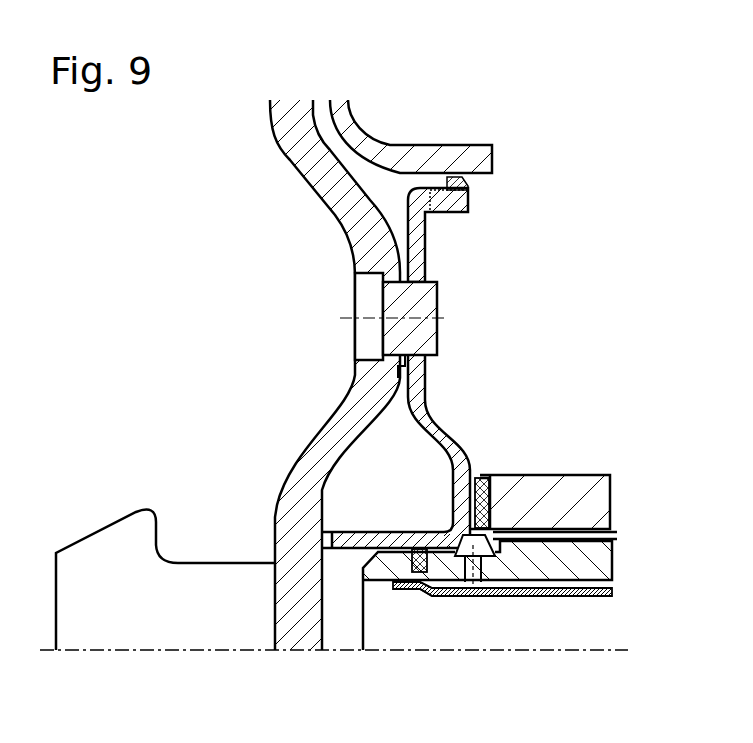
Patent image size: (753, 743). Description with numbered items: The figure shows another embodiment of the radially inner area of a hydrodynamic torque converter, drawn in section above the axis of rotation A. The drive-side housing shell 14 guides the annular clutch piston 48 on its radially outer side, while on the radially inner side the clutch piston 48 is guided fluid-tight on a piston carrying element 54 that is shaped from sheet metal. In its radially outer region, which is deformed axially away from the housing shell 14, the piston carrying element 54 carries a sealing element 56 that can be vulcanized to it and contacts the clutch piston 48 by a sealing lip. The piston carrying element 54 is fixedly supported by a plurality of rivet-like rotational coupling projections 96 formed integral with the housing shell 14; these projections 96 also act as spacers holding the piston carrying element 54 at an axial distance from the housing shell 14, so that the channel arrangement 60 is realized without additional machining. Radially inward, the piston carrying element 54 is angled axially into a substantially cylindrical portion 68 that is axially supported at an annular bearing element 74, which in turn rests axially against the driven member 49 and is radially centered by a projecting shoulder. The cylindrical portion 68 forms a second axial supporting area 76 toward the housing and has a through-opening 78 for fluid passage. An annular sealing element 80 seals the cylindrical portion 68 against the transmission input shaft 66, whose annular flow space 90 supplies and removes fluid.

The housing shell 14 is at (284, 148).
The clutch piston 48 is at (387, 145).
The sealing element 56 is at (468, 197).
The rotational coupling projection 96 is at (422, 325).
The channel arrangement 60 is at (401, 370).
The piston carrying element 54 is at (440, 432).
The annular bearing element 74 is at (492, 478).
The driven member 49 is at (583, 475).
The through-opening 78 is at (325, 543).
The transmission input shaft 66 is at (592, 563).
The annular flow space 90 is at (613, 583).
The second axial supporting area 76 is at (323, 552).
The substantially cylindrical portion 68 is at (385, 541).
The annular sealing element 80 is at (440, 593).
The axis of rotation A is at (624, 650).